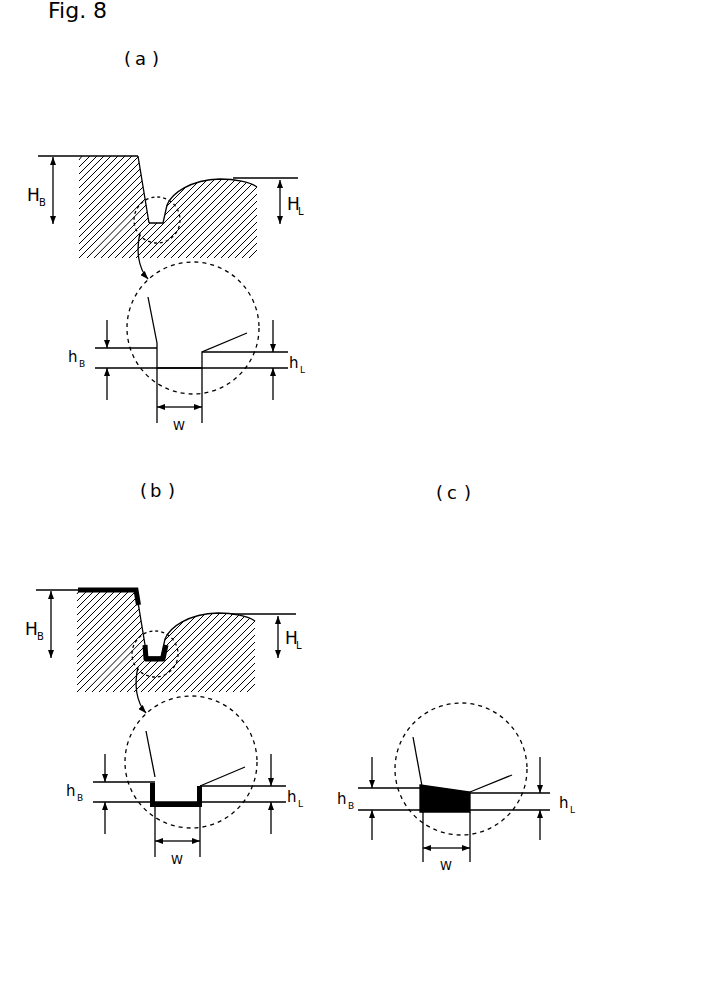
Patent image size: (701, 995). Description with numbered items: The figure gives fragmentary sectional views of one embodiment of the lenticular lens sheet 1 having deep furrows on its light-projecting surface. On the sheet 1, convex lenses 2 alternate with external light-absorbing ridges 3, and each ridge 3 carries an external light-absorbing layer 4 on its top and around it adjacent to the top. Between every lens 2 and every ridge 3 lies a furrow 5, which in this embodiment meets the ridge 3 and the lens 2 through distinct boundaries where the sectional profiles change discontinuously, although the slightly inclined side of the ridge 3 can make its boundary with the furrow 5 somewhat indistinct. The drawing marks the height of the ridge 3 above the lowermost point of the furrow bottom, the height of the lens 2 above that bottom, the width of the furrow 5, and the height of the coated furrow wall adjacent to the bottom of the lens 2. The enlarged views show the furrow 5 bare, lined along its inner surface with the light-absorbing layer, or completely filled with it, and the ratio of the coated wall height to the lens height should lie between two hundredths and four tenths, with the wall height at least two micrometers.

In FIG. 8A, the lenticular lens sheet 1 is at (252, 247).
In FIG. 8B, the lenticular lens sheet 1 is at (202, 674).
In FIG. 8A, the convex lens 2 is at (219, 198).
In FIG. 8B, the convex lens 2 is at (210, 587).
In FIG. 8A, the external light-absorbing ridge 3 is at (93, 190).
In FIG. 8B, the external light-absorbing ridge 3 is at (83, 661).
In FIG. 8A, the external light-absorbing layer 4 is at (112, 152).
In FIG. 8B, the external light-absorbing layer 4 is at (90, 563).
In FIG. 8A, the furrow 5 is at (157, 213).
In FIG. 8B, the furrow 5 is at (166, 590).